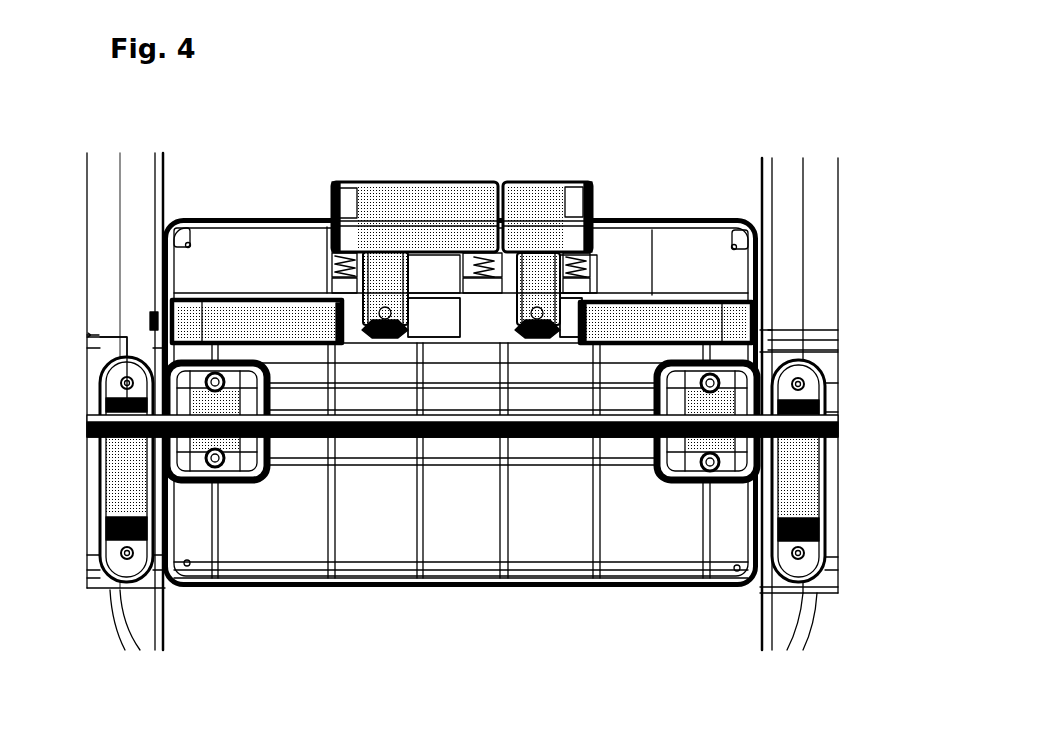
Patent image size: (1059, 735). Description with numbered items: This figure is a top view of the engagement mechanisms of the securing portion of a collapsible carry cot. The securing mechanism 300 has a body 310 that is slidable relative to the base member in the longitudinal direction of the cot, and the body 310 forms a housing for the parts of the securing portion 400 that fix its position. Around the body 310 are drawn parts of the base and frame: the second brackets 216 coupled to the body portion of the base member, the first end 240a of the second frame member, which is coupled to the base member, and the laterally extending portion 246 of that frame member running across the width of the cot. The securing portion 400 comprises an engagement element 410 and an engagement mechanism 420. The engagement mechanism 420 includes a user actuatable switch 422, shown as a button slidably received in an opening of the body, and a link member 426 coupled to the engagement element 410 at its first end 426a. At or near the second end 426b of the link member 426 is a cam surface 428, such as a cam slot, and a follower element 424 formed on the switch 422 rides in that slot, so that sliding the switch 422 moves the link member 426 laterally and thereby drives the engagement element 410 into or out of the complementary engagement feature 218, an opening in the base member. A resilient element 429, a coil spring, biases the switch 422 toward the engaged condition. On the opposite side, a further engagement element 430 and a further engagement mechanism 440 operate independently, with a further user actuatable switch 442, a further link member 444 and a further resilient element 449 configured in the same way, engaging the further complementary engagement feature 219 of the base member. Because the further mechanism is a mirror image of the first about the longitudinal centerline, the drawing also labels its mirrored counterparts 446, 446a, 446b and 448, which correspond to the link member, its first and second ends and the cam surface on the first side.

The second brackets 216 is at (118, 472).
The complementary engagement feature 218 is at (158, 325).
The further complementary engagement feature 219 is at (760, 318).
The first end of the second frame member 240a is at (878, 430).
The laterally extending portion 246 is at (482, 432).
The securing mechanism 300 is at (681, 107).
The body 310 is at (663, 220).
The securing portion 400 is at (355, 146).
The engagement element 410 is at (152, 320).
The engagement mechanism 420 is at (272, 258).
The user actuatable switch 422 is at (407, 182).
The follower element 424 is at (400, 308).
The link member 426 is at (240, 320).
The first end of the link member 426a is at (188, 300).
The second end of the link member 426b is at (420, 385).
The cam surface 428 is at (382, 325).
The resilient element 429 is at (330, 258).
The further engagement element 430 is at (770, 330).
The further engagement mechanism 440 is at (557, 295).
The further user actuatable switch 442 is at (540, 182).
The further link member 444 is at (542, 312).
The second latch plate 446 is at (673, 320).
The first end of second latch plate 446a is at (760, 298).
The second end of second latch plate 446b is at (530, 330).
The second pivot 448 is at (534, 334).
The further resilient element 449 is at (592, 262).